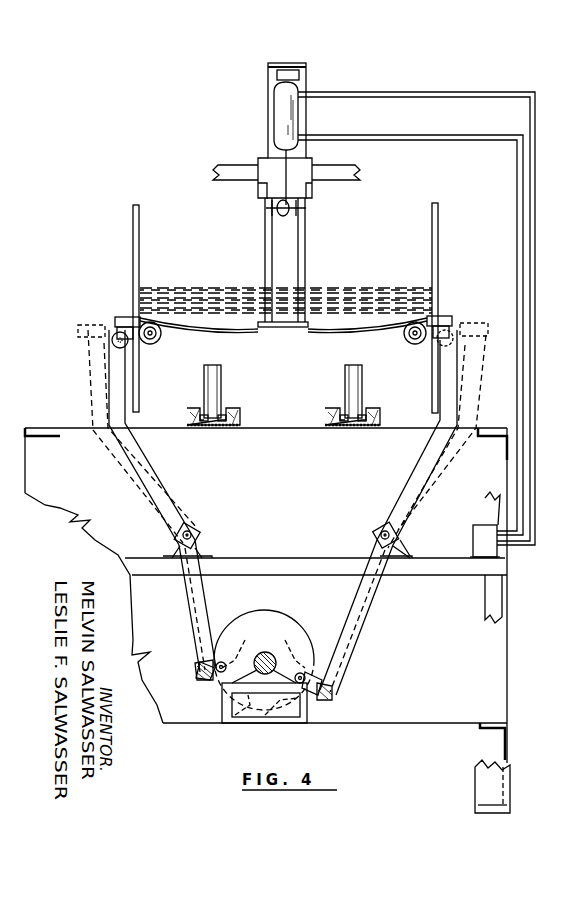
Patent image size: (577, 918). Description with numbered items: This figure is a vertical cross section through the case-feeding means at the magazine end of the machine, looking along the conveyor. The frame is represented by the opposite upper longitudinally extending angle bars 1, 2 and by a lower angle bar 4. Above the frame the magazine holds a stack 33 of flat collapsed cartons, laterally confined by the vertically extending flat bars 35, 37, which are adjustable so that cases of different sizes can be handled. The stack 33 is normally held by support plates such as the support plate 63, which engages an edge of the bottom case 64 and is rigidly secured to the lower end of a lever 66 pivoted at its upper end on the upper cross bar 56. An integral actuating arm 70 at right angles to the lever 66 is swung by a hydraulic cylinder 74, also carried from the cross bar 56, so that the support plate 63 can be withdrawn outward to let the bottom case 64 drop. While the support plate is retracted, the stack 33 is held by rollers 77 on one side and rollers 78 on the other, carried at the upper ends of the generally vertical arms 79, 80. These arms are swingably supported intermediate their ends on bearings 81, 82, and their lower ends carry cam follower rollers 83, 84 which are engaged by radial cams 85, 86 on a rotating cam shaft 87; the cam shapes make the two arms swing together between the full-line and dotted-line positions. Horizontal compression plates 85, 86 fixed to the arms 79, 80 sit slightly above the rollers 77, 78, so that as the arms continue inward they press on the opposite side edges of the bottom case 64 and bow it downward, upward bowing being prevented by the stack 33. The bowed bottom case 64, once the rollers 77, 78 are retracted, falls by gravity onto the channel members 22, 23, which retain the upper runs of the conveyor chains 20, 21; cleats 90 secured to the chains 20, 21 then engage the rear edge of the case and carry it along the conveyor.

The upper longitudinally extending angle bar 1 is at (40, 428).
The upper longitudinally extending angle bar 2 is at (488, 428).
The lower longitudinally extending angle bar 4 is at (491, 755).
The chain 20 is at (228, 428).
The chain 21 is at (340, 430).
The channel member 22 is at (240, 412).
The channel member 23 is at (372, 408).
The stack 33 is at (235, 286).
The flat bar 35 is at (438, 248).
The flat bar 37 is at (139, 234).
The upper cross bar 56 is at (330, 168).
The support plate 63 is at (292, 330).
The bottom case 64 is at (270, 330).
The lever 66 is at (305, 262).
The actuating arm 70 is at (302, 208).
The hydraulic cylinder 74 is at (272, 114).
The roller 77 is at (158, 342).
The roller 78 is at (408, 342).
The arm 79 is at (158, 453).
The arm 80 is at (432, 447).
The bearing 81 is at (172, 550).
The bearing 82 is at (402, 548).
The cam follower roller 83 is at (200, 666).
The cam follower roller 84 is at (330, 688).
The radial cam / compression plate 85 is at (118, 316).
The radial cam / compression plate 86 is at (448, 315).
The cam shaft 87 is at (266, 652).
The cleat 90 is at (221, 380).